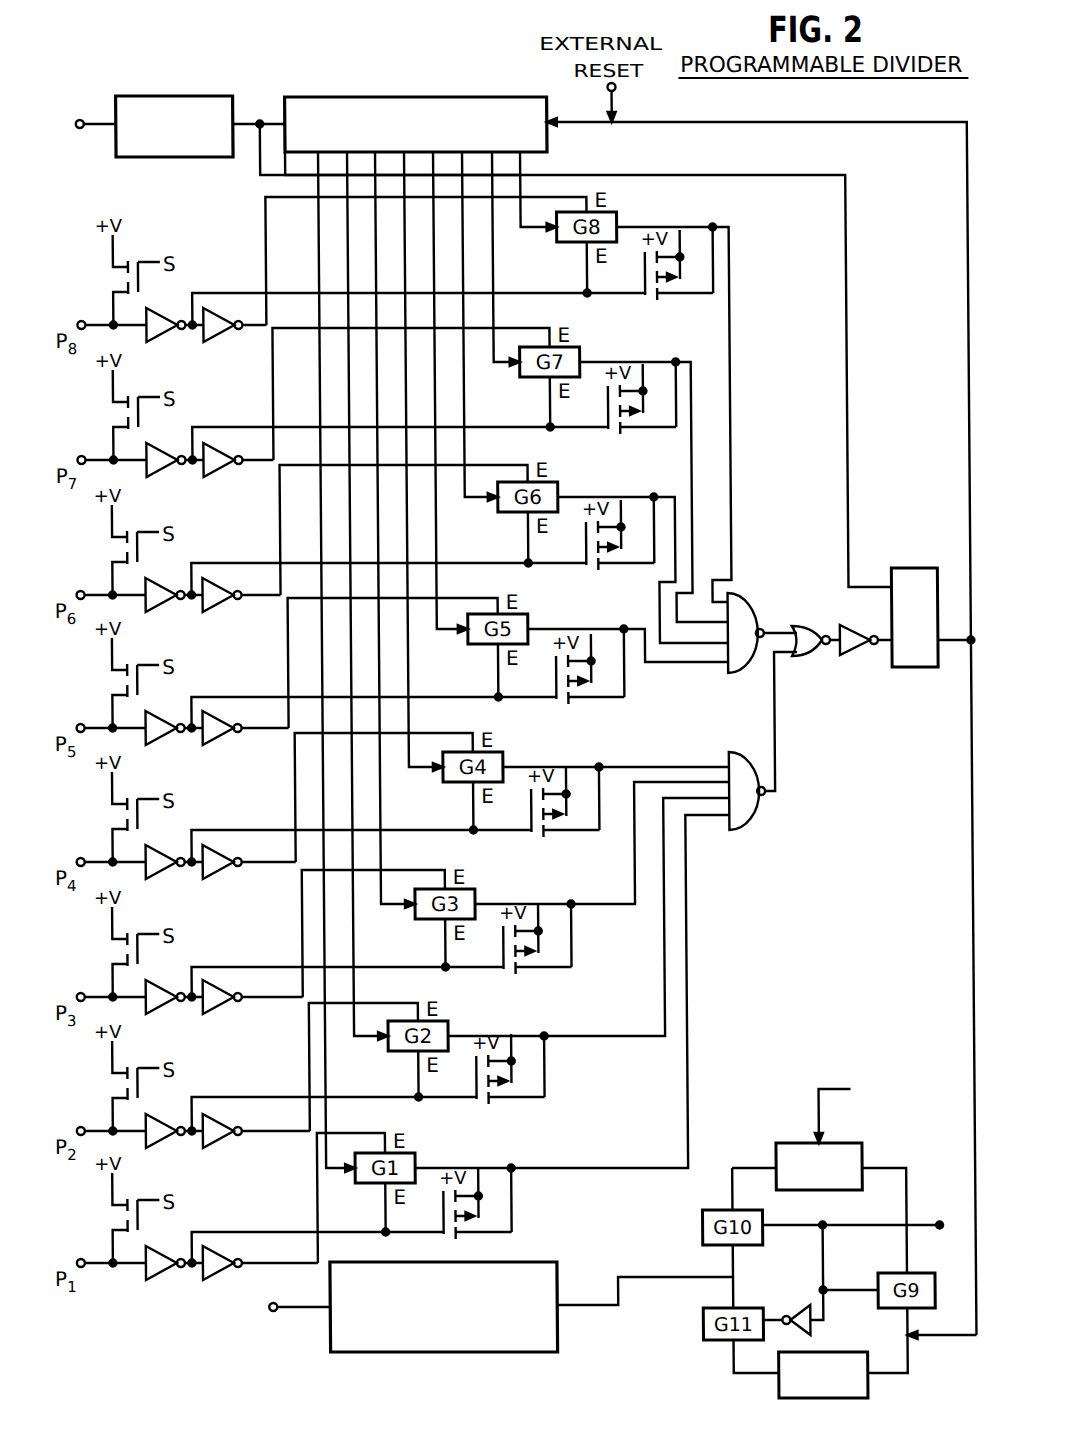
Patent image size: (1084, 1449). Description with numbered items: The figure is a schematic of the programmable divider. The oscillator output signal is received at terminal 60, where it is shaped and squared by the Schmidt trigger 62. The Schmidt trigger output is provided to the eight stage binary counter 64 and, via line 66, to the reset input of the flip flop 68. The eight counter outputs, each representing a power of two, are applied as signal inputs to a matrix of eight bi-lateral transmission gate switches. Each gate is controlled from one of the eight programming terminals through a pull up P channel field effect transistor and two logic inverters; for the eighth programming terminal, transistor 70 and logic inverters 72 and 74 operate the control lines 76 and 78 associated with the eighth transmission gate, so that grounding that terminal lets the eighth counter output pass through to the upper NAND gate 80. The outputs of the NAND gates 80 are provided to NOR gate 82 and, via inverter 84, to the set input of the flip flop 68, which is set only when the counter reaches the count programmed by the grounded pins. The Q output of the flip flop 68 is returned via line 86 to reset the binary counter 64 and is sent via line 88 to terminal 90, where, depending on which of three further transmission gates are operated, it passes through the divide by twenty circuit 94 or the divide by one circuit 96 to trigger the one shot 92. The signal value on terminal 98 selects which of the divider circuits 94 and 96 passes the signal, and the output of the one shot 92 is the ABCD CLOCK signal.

The terminal 60 is at (84, 129).
The Schmidt trigger 62 is at (183, 95).
The eight stage binary counter 64 is at (390, 97).
The line 66 is at (700, 173).
The flip flop 68 is at (913, 568).
The pull up P channel field effect transistor 70 is at (132, 257).
The logic inverter 72 is at (161, 342).
The logic inverter 74 is at (223, 342).
The control line 76 is at (231, 293).
The control line 78 is at (267, 263).
The NAND gate 80 is at (752, 597).
The NOR gate 82 is at (810, 660).
The inverter 84 is at (855, 648).
The line 86 is at (967, 215).
The line 88 is at (968, 851).
The terminal 90 is at (903, 1339).
The one shot 92 is at (521, 1262).
The divide by 20 circuit 94 is at (780, 1143).
The divide by 1 circuit 96 is at (833, 1352).
The terminal 98 is at (934, 1229).